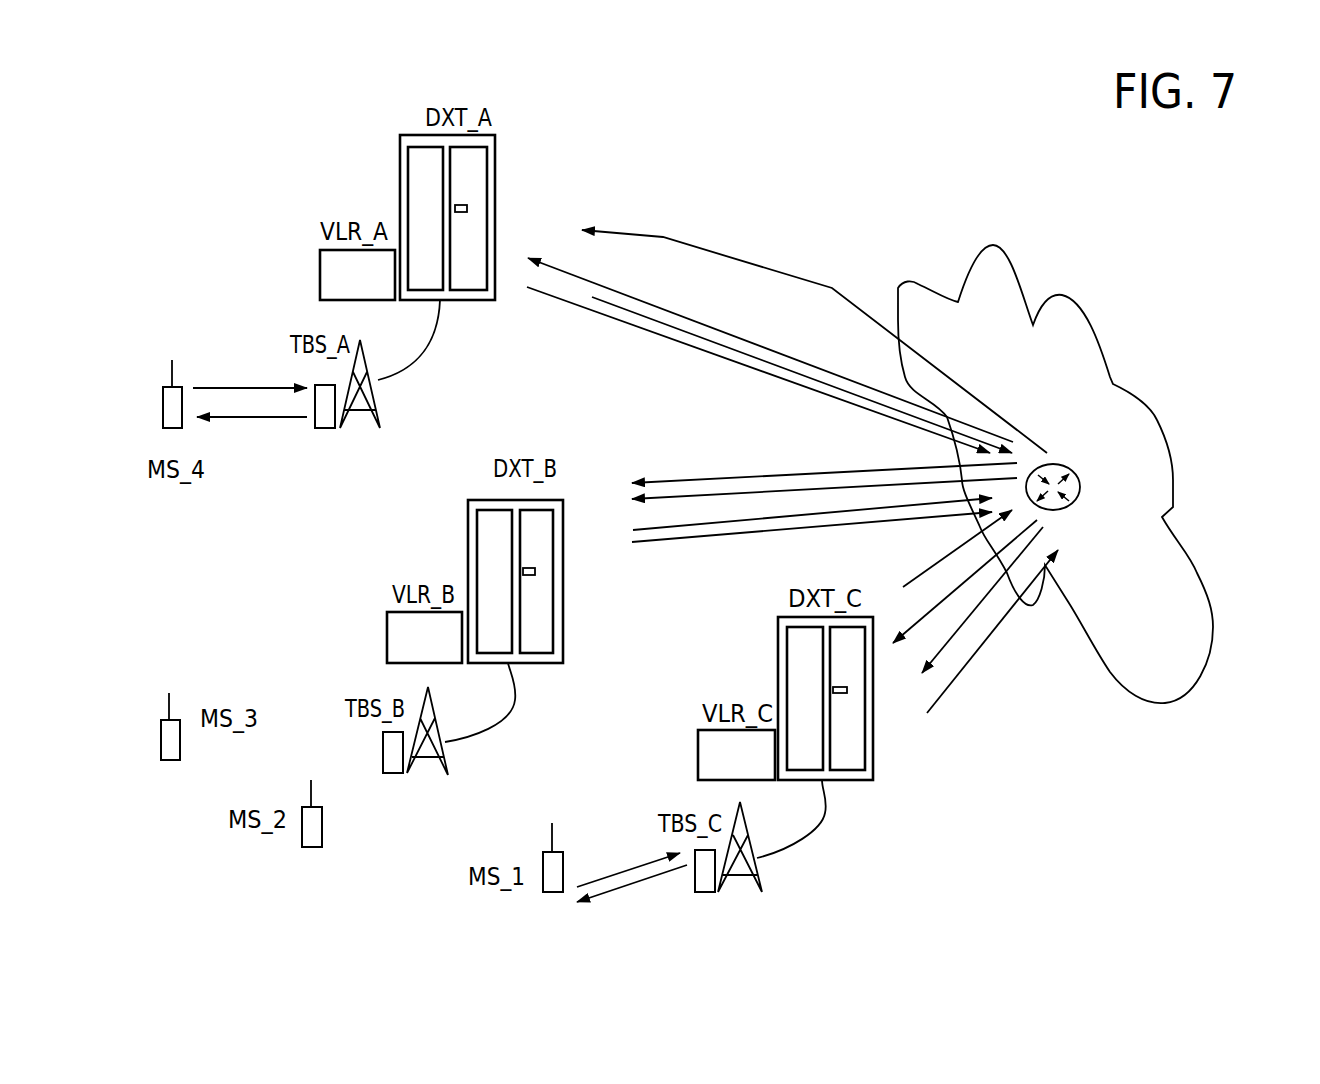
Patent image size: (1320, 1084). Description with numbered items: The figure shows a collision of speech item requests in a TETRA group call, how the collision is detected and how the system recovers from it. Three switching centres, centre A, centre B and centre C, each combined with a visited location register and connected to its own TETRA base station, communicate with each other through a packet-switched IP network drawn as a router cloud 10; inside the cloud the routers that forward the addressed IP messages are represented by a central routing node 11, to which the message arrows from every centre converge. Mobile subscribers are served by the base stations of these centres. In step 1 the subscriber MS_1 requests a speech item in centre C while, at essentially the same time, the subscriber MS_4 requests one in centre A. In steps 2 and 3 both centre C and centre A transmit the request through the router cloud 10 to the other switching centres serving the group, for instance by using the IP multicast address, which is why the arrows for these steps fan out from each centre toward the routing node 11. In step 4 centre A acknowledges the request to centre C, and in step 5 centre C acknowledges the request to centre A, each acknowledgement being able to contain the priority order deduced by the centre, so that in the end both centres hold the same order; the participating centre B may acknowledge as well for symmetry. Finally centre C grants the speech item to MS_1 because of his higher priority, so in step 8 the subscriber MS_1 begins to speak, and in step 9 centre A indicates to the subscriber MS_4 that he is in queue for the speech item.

The network cloud 10 is at (1113, 378).
The network hub / routing node 11 is at (1081, 490).
The step 1 (speech item request by MS_1) 1 is at (436, 620).
The step 2 (forwarding of the request) 2 is at (772, 418).
The step 3 (forwarding of the request) 3 is at (798, 461).
The step 4 (acknowledgement by DXT_A) 4 is at (785, 480).
The step 5 (acknowledgement by DXT_C) 5 is at (820, 476).
The step 8 (subscriber begins to speak) 8 is at (632, 890).
The step 9 (queue indication) 9 is at (252, 435).